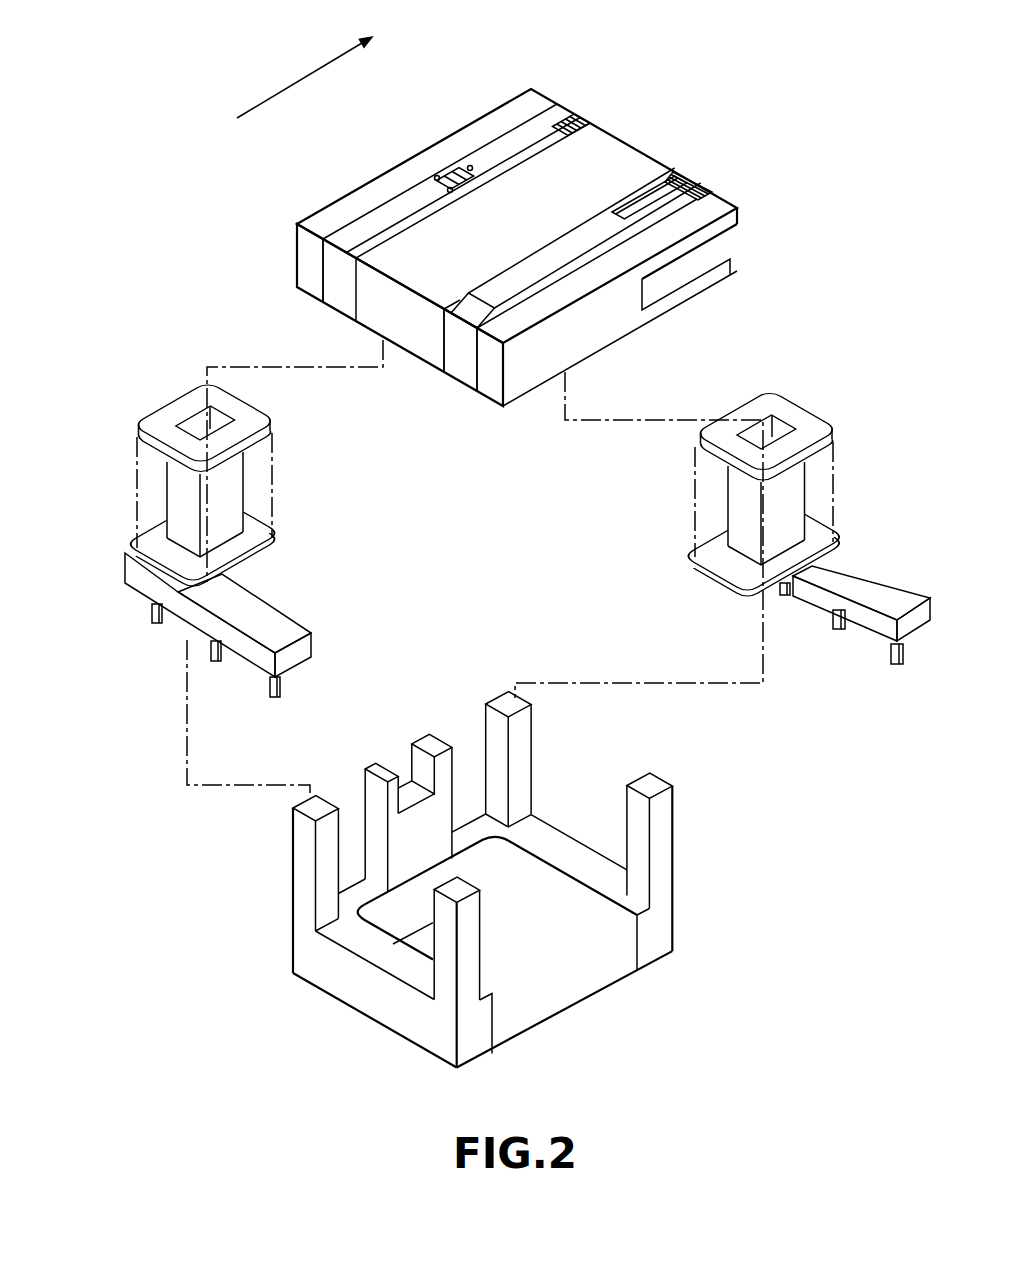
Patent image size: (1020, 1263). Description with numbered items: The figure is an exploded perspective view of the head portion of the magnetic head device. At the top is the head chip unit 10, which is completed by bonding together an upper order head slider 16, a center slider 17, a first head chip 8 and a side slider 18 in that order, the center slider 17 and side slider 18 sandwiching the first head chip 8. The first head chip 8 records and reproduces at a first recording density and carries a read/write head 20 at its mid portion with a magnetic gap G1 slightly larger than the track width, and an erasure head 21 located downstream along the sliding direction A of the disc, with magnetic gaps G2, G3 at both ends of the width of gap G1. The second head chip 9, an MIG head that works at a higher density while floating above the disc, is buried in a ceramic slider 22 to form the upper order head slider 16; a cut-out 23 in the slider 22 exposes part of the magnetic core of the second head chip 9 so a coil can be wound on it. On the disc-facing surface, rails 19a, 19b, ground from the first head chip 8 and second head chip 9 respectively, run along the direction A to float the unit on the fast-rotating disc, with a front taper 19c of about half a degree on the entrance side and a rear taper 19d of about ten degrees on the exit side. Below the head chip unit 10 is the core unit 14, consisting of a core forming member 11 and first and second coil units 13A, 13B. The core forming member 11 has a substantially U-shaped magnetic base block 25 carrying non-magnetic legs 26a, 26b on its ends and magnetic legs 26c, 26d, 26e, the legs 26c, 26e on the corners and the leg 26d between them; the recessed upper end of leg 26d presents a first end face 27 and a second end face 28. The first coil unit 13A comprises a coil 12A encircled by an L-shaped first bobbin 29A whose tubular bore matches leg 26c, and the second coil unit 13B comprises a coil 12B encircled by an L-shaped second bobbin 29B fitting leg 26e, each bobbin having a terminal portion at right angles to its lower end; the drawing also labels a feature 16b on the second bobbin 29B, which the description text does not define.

The direction of sliding movement A is at (304, 77).
The first head chip 8 is at (540, 120).
The second head chip 9 is at (673, 176).
The head chip unit 10 is at (700, 120).
The core forming member 11 is at (568, 1012).
The coil 12A is at (150, 500).
The coil 12B is at (712, 498).
The first coil unit 13A is at (142, 580).
The second coil unit 13B is at (820, 533).
The core unit 14 is at (745, 892).
The upper order head slider 16 is at (460, 375).
The through hole of bobbin 16b is at (765, 425).
The center slider 17 is at (403, 350).
The side slider 18 is at (302, 262).
The rail 19a is at (528, 132).
The rail 19b is at (577, 236).
The front taper 19c is at (345, 240).
The rear taper 19d is at (583, 117).
The read/write head 20 is at (423, 190).
The erasure head 21 is at (468, 166).
The slider 22 is at (600, 327).
The cut-out 23 is at (692, 270).
The base block 25 is at (587, 927).
The leg 26a is at (468, 967).
The leg 26b is at (665, 832).
The leg 26c is at (298, 857).
The leg 26d is at (410, 760).
The leg 26e is at (527, 745).
The first end face 27 is at (380, 763).
The second end face 28 is at (430, 738).
The first bobbin 29A is at (232, 495).
The second bobbin 29B is at (790, 487).
The magnetic gap G1 is at (447, 188).
The magnetic gap G2 is at (435, 176).
The magnetic gap G3 is at (472, 170).